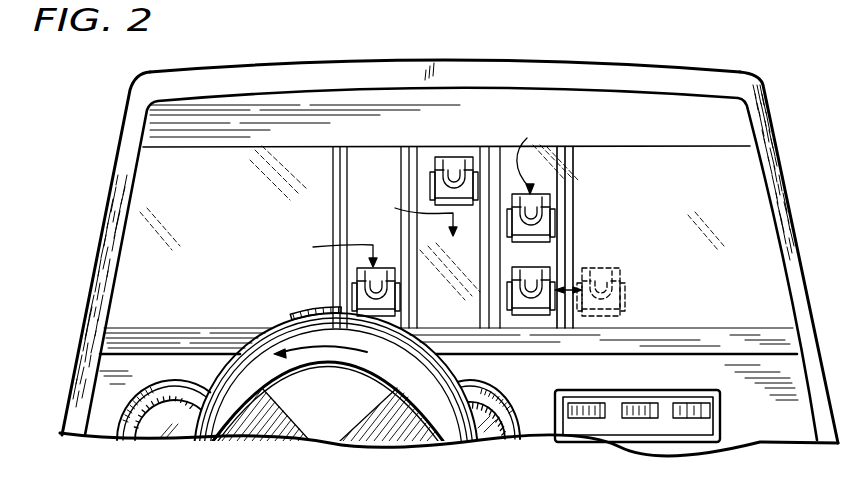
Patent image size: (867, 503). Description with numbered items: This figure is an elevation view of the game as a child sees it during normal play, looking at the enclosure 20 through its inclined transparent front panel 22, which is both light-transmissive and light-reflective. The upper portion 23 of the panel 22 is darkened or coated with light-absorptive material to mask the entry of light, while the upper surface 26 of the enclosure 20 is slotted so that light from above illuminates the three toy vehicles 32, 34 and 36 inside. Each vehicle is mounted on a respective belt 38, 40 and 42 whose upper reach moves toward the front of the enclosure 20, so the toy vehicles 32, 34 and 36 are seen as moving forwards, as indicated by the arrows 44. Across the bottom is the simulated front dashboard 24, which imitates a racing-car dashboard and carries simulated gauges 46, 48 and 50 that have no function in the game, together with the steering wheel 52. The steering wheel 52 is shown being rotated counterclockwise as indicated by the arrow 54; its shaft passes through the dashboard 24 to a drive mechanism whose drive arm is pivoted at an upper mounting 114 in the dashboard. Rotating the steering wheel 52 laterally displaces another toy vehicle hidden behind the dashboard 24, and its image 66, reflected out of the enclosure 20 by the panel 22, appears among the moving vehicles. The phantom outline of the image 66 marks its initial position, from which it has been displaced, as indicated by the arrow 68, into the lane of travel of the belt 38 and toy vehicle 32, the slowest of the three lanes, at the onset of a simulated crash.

The enclosure 20 is at (793, 240).
The inclined transparent front panel 22 is at (740, 163).
The upper portion of panel 23 is at (275, 103).
The simulated front dashboard 24 is at (782, 428).
The upper surface of the enclosure 26 is at (733, 62).
The toy vehicle 32 is at (552, 211).
The toy vehicle 34 is at (450, 164).
The toy vehicle 36 is at (357, 272).
The belt 38 is at (548, 160).
The belt 40 is at (477, 257).
The belt 42 is at (355, 172).
The arrows 44 is at (419, 189).
The simulated gauge 46 is at (642, 388).
The simulated gauge 48 is at (503, 393).
The simulated gauge 50 is at (170, 384).
The steering wheel 52 is at (252, 362).
The arrow 54 is at (327, 352).
The image of other toy vehicle 66 is at (509, 298).
The arrow 68 is at (568, 278).
The upper mounting of the pivot 114 is at (300, 316).